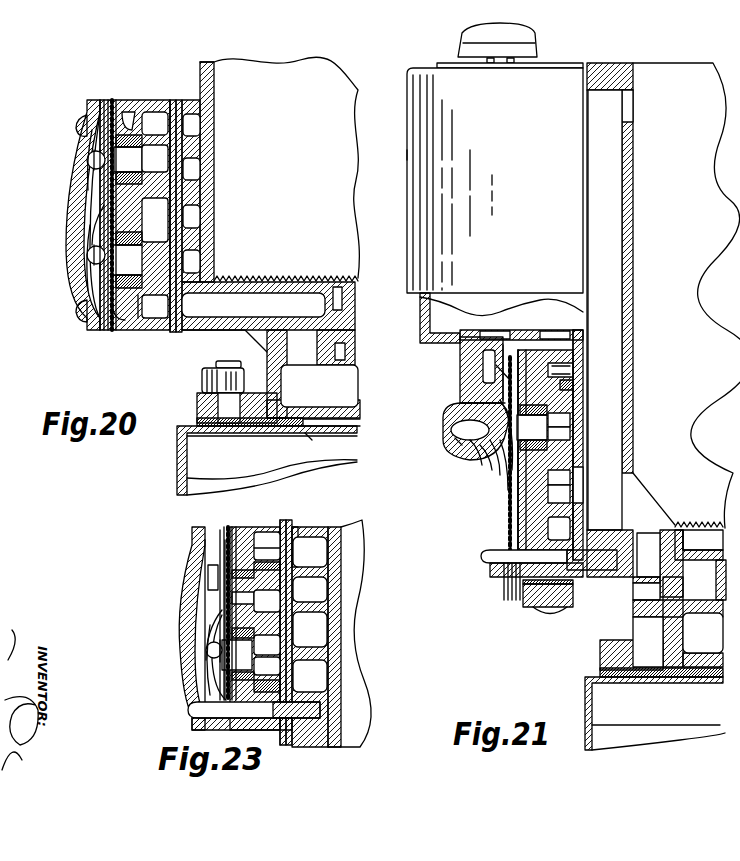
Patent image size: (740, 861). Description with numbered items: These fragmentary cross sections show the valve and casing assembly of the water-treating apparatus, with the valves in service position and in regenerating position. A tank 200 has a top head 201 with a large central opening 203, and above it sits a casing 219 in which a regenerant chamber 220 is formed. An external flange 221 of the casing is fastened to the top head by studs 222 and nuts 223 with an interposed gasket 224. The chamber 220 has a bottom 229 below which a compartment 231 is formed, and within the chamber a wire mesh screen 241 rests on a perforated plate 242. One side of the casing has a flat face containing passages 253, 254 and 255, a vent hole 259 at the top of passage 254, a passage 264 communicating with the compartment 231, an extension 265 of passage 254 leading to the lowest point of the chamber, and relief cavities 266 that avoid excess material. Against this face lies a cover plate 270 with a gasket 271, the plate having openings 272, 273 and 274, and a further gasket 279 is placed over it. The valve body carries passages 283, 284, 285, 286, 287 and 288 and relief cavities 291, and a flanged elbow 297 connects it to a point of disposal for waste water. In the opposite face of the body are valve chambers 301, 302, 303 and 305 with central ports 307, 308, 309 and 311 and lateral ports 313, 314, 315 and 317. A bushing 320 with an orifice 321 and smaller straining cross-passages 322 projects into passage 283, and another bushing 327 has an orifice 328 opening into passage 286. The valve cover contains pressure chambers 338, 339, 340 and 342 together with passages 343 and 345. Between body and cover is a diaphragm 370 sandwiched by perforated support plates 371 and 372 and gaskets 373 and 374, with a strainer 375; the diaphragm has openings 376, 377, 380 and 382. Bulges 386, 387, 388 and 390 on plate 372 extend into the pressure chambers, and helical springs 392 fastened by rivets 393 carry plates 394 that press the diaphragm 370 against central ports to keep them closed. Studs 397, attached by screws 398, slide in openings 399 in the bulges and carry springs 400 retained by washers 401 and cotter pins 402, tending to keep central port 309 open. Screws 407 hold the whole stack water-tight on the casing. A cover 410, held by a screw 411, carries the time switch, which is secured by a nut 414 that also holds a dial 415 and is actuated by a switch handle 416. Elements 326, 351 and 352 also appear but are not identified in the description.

In FIG. 20, the tank 200 is at (177, 478).
In FIG. 21, the tank 200 is at (585, 712).
In FIG. 20, the top head 201 is at (182, 430).
In FIG. 21, the top head 201 is at (586, 680).
In FIG. 20, the central opening 203 is at (312, 438).
In FIG. 20, the casing 219 is at (208, 62).
In FIG. 23, the casing 219 is at (334, 527).
In FIG. 21, the casing 219 is at (615, 63).
In FIG. 20, the regenerant chamber 220 is at (279, 167).
In FIG. 21, the regenerant chamber 220 is at (686, 295).
In FIG. 20, the external flange 221 is at (197, 410).
In FIG. 21, the external flange 221 is at (600, 660).
In FIG. 20, the studs 222 is at (236, 354).
In FIG. 20, the nuts 223 is at (202, 380).
In FIG. 20, the gasket 224 is at (197, 422).
In FIG. 21, the gasket 224 is at (600, 672).
In FIG. 20, the bottom 229 is at (335, 356).
In FIG. 21, the bottom 229 is at (716, 590).
In FIG. 20, the compartment 231 is at (313, 391).
In FIG. 21, the compartment 231 is at (693, 622).
In FIG. 20, the wire mesh screen 241 is at (297, 278).
In FIG. 21, the wire mesh screen 241 is at (705, 524).
In FIG. 20, the perforated plate 242 is at (348, 298).
In FIG. 21, the perforated plate 242 is at (699, 545).
In FIG. 23, the passage 253 is at (310, 637).
In FIG. 21, the passage 254 is at (605, 310).
In FIG. 23, the passage 255 is at (310, 589).
In FIG. 21, the vent hole 259 is at (636, 108).
In FIG. 20, the passage 264 is at (268, 350).
In FIG. 21, the extension 265 is at (655, 573).
In FIG. 20, the relief cavities 266 is at (192, 191).
In FIG. 23, the relief cavities 266 is at (310, 652).
In FIG. 20, the cover plate 270 is at (173, 332).
In FIG. 23, the cover plate 270 is at (283, 745).
In FIG. 21, the cover plate 270 is at (583, 575).
In FIG. 20, the gasket 271 is at (180, 332).
In FIG. 23, the gasket 271 is at (290, 735).
In FIG. 21, the gasket 271 is at (583, 352).
In FIG. 21, the opening 272 is at (583, 483).
In FIG. 23, the opening 273 is at (296, 528).
In FIG. 20, the opening 274 is at (182, 309).
In FIG. 20, the gasket 279 is at (169, 332).
In FIG. 23, the gasket 279 is at (280, 745).
In FIG. 21, the gasket 279 is at (573, 352).
In FIG. 20, the passage 283 is at (155, 158).
In FIG. 23, the passage 283 is at (267, 645).
In FIG. 21, the passage 283 is at (572, 390).
In FIG. 20, the passage 284 is at (155, 220).
In FIG. 23, the passage 285 is at (267, 601).
In FIG. 21, the passage 285 is at (573, 395).
In FIG. 23, the passage 286 is at (267, 546).
In FIG. 21, the passage 287 is at (559, 494).
In FIG. 20, the passage 288 is at (155, 306).
In FIG. 21, the passage 288 is at (559, 483).
In FIG. 20, the relief cavities 291 is at (155, 123).
In FIG. 23, the relief cavities 291 is at (267, 686).
In FIG. 21, the flanged elbow 297 is at (570, 612).
In FIG. 20, the valve chamber 301 is at (118, 312).
In FIG. 20, the valve chamber 302 is at (132, 118).
In FIG. 21, the valve chamber 303 is at (559, 420).
In FIG. 23, the valve chamber 305 is at (252, 684).
In FIG. 20, the central port 307 is at (127, 260).
In FIG. 20, the central port 308 is at (128, 159).
In FIG. 21, the central port 309 is at (532, 427).
In FIG. 23, the central port 311 is at (237, 655).
In FIG. 20, the lateral port 313 is at (138, 312).
In FIG. 20, the lateral port 314 is at (138, 195).
In FIG. 21, the lateral port 315 is at (538, 472).
In FIG. 23, the lateral port 317 is at (250, 616).
In FIG. 21, the bushing 320 is at (530, 350).
In FIG. 21, the orifice 321 is at (520, 348).
In FIG. 21, the cross-passages 322 is at (573, 372).
In FIG. 23, the spacer 326 is at (243, 598).
In FIG. 23, the bushing 327 is at (267, 553).
In FIG. 23, the orifice 328 is at (256, 571).
In FIG. 20, the pressure chamber 338 is at (88, 256).
In FIG. 20, the pressure chamber 339 is at (88, 160).
In FIG. 21, the pressure chamber 340 is at (445, 415).
In FIG. 23, the pressure chamber 342 is at (212, 640).
In FIG. 23, the passage 343 is at (207, 578).
In FIG. 21, the passage 345 is at (505, 382).
In FIG. 21, the block 351 is at (483, 360).
In FIG. 21, the wall 352 is at (500, 372).
In FIG. 20, the diaphragm 370 is at (114, 100).
In FIG. 23, the diaphragm 370 is at (228, 527).
In FIG. 21, the diaphragm 370 is at (512, 580).
In FIG. 20, the perforated support plate 371 is at (118, 100).
In FIG. 23, the perforated support plate 371 is at (232, 527).
In FIG. 21, the perforated support plate 371 is at (509, 582).
In FIG. 20, the perforated support plate 372 is at (112, 100).
In FIG. 23, the perforated support plate 372 is at (225, 527).
In FIG. 21, the perforated support plate 372 is at (515, 578).
In FIG. 20, the gasket 373 is at (120, 100).
In FIG. 23, the gasket 373 is at (236, 527).
In FIG. 21, the gasket 373 is at (506, 584).
In FIG. 20, the gasket 374 is at (110, 100).
In FIG. 23, the gasket 374 is at (220, 530).
In FIG. 21, the gasket 374 is at (518, 575).
In FIG. 23, the strainer 375 is at (205, 565).
In FIG. 23, the opening 376 is at (195, 545).
In FIG. 23, the opening 377 is at (222, 600).
In FIG. 21, the opening 380 is at (506, 345).
In FIG. 21, the opening 382 is at (505, 470).
In FIG. 20, the bulge 386 is at (92, 140).
In FIG. 20, the bulge 387 is at (90, 242).
In FIG. 21, the bulge 388 is at (470, 403).
In FIG. 23, the bulge 390 is at (210, 625).
In FIG. 20, the helical springs 392 is at (98, 172).
In FIG. 23, the helical springs 392 is at (215, 662).
In FIG. 20, the rivets 393 is at (92, 165).
In FIG. 23, the rivets 393 is at (206, 650).
In FIG. 20, the plates 394 is at (88, 192).
In FIG. 23, the plates 394 is at (210, 680).
In FIG. 21, the studs 397 is at (452, 430).
In FIG. 21, the screws 398 is at (505, 478).
In FIG. 21, the openings 399 is at (498, 465).
In FIG. 21, the springs 400 is at (488, 462).
In FIG. 21, the washers 401 is at (478, 458).
In FIG. 21, the cotter pins 402 is at (458, 440).
In FIG. 20, the screws 407 is at (80, 122).
In FIG. 23, the screws 407 is at (188, 710).
In FIG. 21, the screws 407 is at (481, 556).
In FIG. 21, the cover 410 is at (407, 74).
In FIG. 21, the screw 411 is at (407, 155).
In FIG. 21, the nut 414 is at (512, 60).
In FIG. 21, the dial 415 is at (560, 63).
In FIG. 21, the switch handle 416 is at (460, 43).